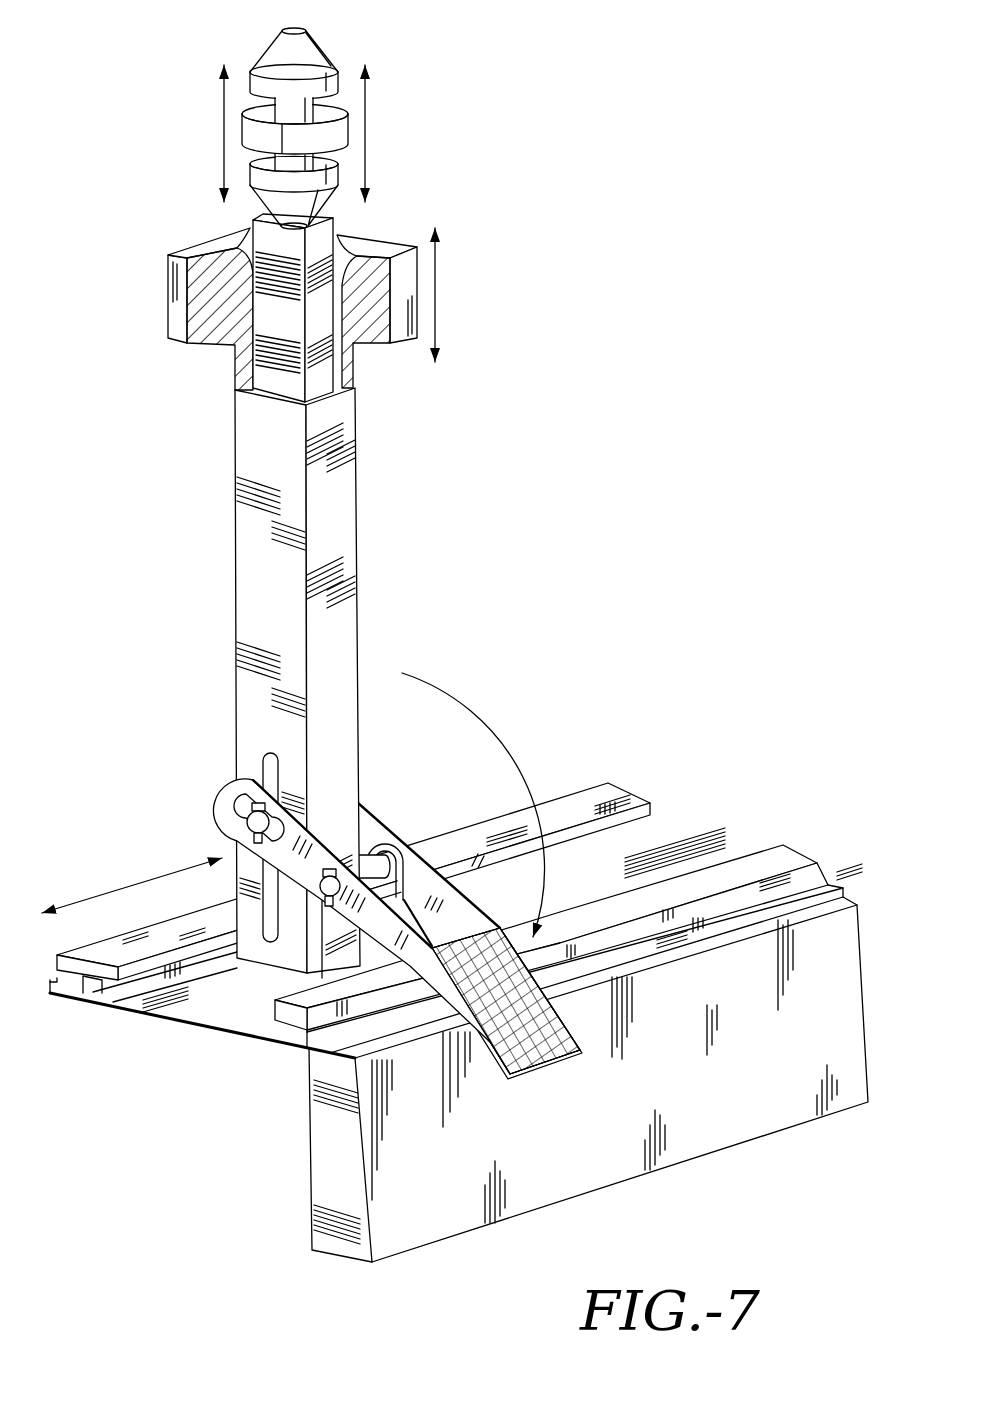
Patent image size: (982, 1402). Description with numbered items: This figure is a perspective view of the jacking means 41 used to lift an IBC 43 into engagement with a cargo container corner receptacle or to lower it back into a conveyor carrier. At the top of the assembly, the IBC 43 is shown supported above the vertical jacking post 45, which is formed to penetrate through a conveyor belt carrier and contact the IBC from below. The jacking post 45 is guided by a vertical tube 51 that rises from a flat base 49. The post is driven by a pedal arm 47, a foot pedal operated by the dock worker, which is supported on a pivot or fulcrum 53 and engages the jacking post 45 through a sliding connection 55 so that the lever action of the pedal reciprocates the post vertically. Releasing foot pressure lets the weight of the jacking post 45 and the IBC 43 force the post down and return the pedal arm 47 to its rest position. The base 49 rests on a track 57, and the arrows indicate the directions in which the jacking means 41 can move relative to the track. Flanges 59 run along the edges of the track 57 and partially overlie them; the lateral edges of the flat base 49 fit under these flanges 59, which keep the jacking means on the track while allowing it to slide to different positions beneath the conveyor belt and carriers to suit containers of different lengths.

The jacking means 41 is at (445, 489).
The IBC 43 is at (307, 58).
The jacking post 45 is at (325, 240).
The pedal arm 47 is at (427, 888).
The base 49 is at (223, 955).
The vertical tube 51 is at (257, 597).
The pivot or fulcrum 53 is at (375, 862).
The sliding connection 55 is at (245, 829).
The track 57 is at (636, 846).
The flanges 59 is at (103, 973).